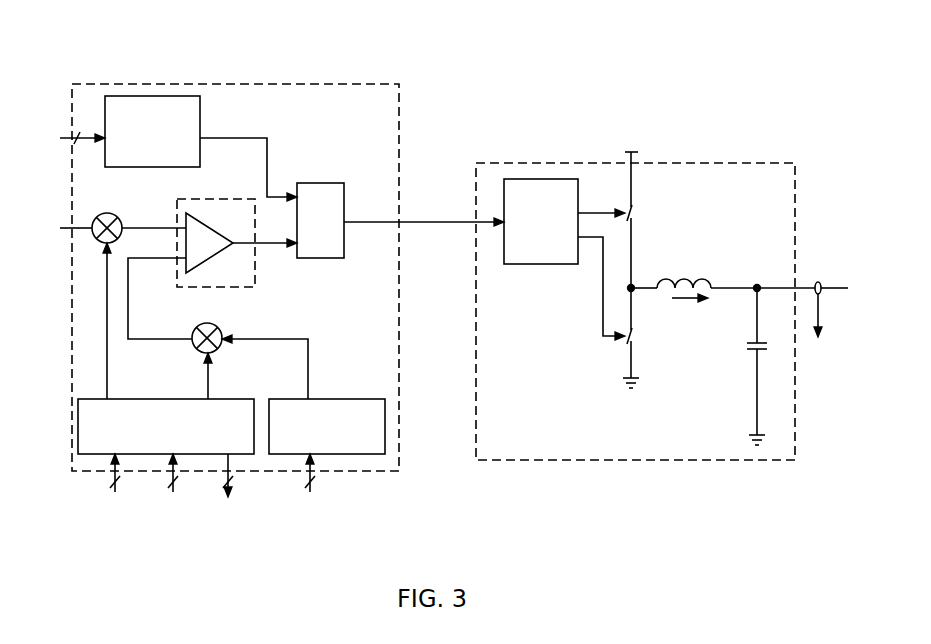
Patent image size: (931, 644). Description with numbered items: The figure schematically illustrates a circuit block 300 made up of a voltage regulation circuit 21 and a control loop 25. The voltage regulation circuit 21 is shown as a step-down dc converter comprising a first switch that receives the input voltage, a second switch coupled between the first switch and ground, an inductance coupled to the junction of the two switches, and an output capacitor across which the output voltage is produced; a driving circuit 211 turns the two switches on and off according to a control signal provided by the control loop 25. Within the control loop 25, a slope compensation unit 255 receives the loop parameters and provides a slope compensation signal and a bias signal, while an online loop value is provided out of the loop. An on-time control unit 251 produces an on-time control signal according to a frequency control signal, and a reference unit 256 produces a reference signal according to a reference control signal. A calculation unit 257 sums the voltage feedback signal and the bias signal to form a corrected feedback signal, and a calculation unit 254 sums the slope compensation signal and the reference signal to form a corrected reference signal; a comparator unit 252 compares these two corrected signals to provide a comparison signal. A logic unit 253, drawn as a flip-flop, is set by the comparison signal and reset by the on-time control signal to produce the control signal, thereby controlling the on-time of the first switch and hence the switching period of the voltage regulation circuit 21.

The circuit block 300 is at (722, 52).
The control loop 25 is at (294, 84).
The voltage regulation circuit 21 is at (725, 163).
The on-time control unit 251 is at (184, 167).
The comparator unit 252 is at (177, 287).
The logic unit 253 is at (330, 258).
The calculation unit 254 is at (217, 327).
The slope compensation unit 255 is at (222, 399).
The reference unit 256 is at (313, 399).
The calculation unit 257 is at (113, 201).
The driving circuit 211 is at (540, 264).